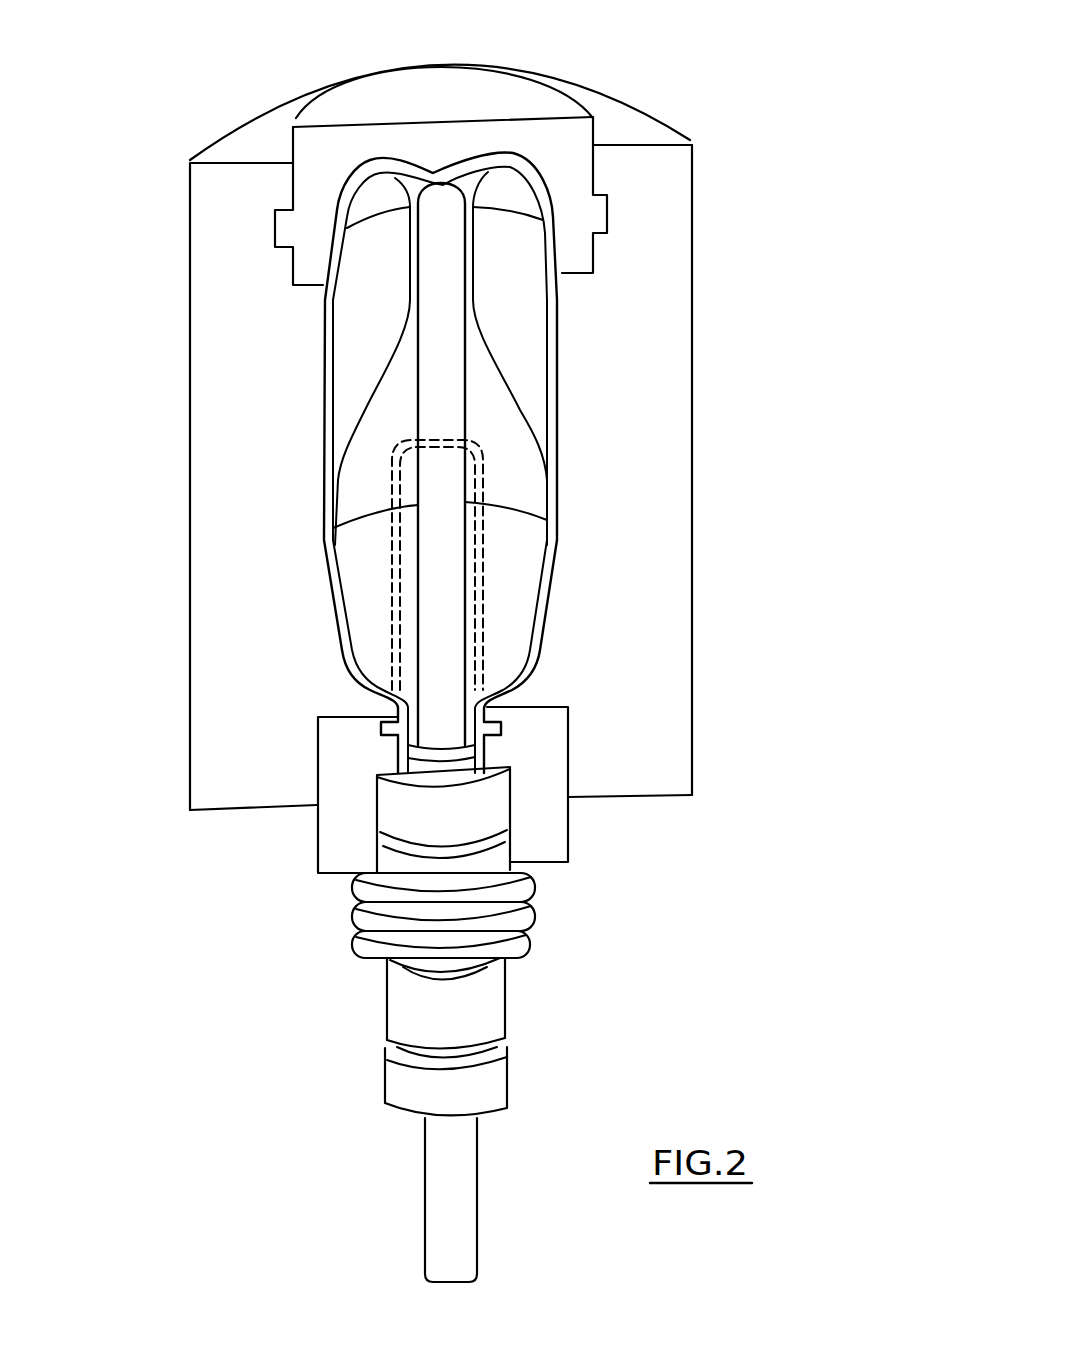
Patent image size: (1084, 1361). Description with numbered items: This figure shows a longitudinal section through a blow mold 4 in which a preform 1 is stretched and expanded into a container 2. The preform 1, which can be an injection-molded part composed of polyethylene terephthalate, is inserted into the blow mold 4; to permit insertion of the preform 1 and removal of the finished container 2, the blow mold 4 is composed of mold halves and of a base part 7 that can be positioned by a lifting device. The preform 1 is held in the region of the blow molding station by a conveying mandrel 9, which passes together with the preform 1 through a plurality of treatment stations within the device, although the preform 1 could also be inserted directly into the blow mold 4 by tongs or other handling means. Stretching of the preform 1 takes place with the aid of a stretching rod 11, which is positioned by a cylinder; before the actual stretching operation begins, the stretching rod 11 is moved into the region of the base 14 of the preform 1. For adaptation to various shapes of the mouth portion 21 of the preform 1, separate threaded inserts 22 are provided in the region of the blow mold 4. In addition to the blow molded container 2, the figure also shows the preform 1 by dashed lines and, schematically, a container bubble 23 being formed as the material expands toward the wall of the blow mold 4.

The preform 1 is at (480, 600).
The container 2 is at (555, 377).
The blow mold 4 is at (647, 442).
The base part 7 is at (530, 83).
The conveying mandrel 9 is at (540, 947).
The stretching rod 11 is at (425, 1213).
The base 14 is at (480, 440).
The mouth portion 21 is at (497, 737).
The threaded inserts 22 is at (553, 825).
The container bubble 23 is at (497, 338).